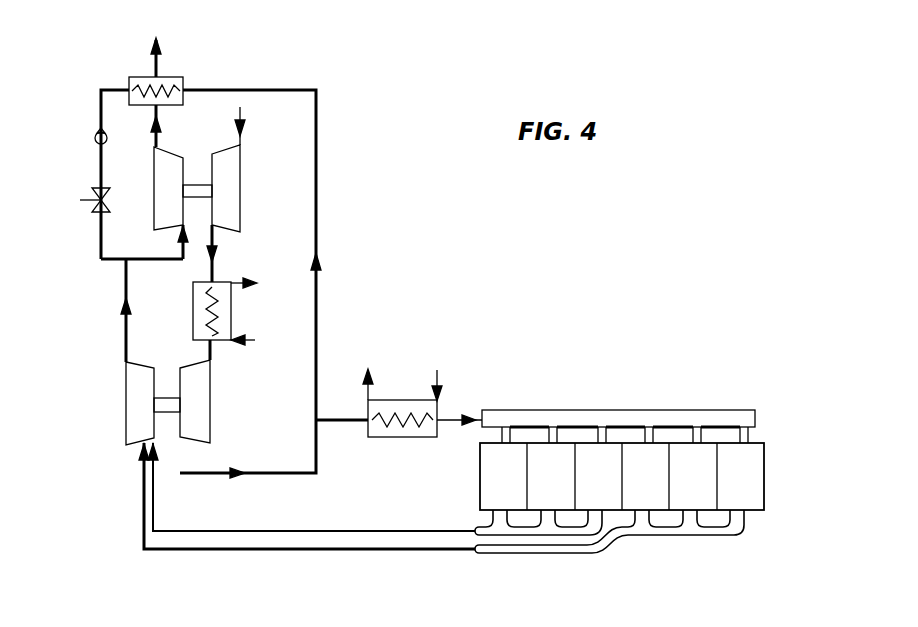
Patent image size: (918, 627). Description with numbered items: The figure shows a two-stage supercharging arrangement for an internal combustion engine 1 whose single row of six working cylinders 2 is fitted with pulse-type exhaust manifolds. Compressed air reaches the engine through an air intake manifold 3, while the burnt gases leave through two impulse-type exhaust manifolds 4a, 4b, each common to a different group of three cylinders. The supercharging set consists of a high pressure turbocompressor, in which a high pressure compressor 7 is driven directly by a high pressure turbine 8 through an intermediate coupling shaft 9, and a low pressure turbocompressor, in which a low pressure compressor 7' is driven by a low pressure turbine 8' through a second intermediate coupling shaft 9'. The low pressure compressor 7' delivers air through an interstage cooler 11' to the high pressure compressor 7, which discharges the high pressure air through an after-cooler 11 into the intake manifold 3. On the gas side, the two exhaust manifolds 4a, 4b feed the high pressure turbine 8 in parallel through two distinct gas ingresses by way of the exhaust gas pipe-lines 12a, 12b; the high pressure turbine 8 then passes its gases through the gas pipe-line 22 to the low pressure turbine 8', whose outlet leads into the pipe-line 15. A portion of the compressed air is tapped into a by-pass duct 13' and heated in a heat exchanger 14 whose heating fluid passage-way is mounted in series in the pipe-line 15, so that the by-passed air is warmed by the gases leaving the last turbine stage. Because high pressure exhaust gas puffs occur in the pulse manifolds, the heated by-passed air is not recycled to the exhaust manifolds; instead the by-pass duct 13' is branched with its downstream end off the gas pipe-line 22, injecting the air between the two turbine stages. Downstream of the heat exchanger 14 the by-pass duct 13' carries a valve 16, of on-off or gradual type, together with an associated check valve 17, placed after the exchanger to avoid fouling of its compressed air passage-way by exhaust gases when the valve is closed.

The internal combustion engine 1 is at (772, 476).
The working cylinders 2 is at (621, 476).
The air intake manifold 3 is at (602, 422).
The impulse-type exhaust manifold 4a is at (650, 536).
The impulse-type exhaust manifold 4b is at (478, 527).
The high pressure compressor 7 is at (218, 401).
The low pressure compressor 7' is at (243, 194).
The high pressure turbine 8 is at (124, 403).
The low pressure turbine 8' is at (157, 182).
The intermediate coupling shaft 9 is at (167, 373).
The intermediate coupling shaft 9' is at (197, 161).
The after-cooler 11 is at (399, 422).
The interstage cooler 11' is at (244, 319).
The exhaust gas pipe-line 12a is at (346, 549).
The exhaust gas pipe-line 12b is at (345, 531).
The by-pass duct 13' is at (216, 261).
The heat exchanger 14 is at (175, 77).
The pipe-line 15 is at (153, 64).
The valve 16 is at (95, 212).
The check valve 17 is at (95, 138).
The gas pipe-line 22 is at (126, 344).